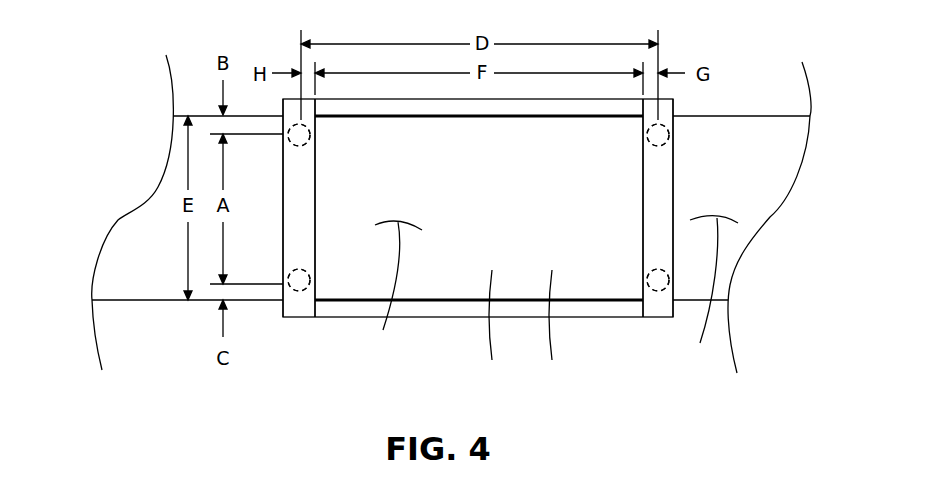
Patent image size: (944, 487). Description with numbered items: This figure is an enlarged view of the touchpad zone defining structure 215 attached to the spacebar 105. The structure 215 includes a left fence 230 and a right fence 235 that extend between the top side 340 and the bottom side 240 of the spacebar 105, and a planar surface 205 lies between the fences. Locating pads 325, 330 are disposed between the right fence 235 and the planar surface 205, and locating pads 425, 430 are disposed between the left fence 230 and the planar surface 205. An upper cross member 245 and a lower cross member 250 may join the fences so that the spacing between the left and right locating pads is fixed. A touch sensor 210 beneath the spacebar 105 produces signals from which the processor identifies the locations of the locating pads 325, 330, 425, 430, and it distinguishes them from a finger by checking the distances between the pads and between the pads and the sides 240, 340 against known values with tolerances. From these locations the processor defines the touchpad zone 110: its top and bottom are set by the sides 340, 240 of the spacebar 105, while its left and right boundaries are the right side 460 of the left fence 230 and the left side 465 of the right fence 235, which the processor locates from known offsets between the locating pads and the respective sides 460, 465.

The spacebar 105 is at (120, 300).
The touchpad zone 110 is at (497, 327).
The planar surface 205 is at (549, 293).
The touch sensor 210 is at (557, 327).
The structure 215 is at (689, 188).
The left fence 230 is at (300, 307).
The right fence 235 is at (662, 307).
The side 240 is at (157, 300).
The cross member 245 is at (428, 108).
The cross member 250 is at (443, 307).
The locating pad 325 is at (647, 280).
The locating pad 330 is at (647, 134).
The side 340 is at (738, 115).
The locating pad 425 is at (309, 280).
The locating pad 430 is at (310, 137).
The right side of the left fence 460 is at (315, 219).
The left side of the right fence 465 is at (643, 219).